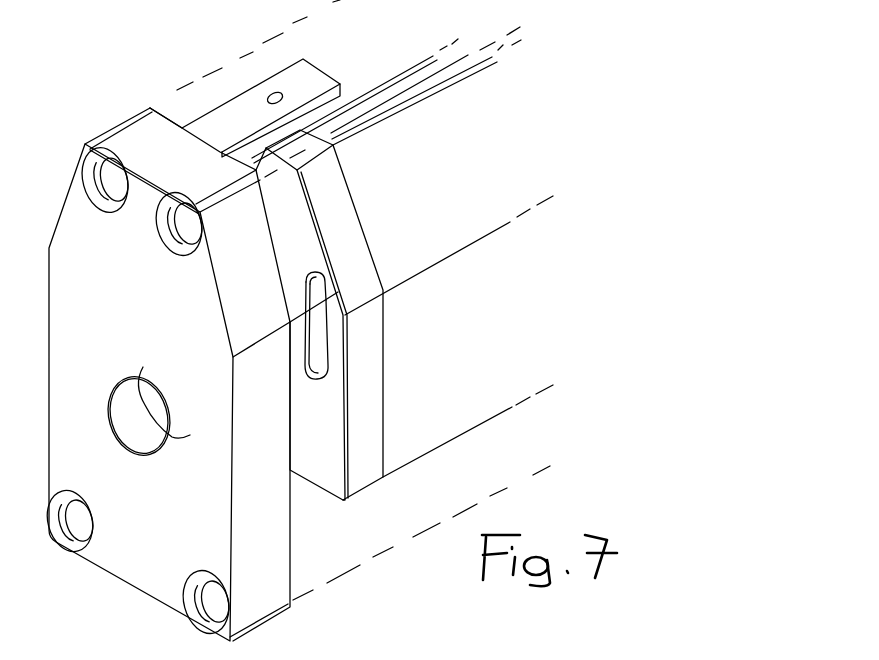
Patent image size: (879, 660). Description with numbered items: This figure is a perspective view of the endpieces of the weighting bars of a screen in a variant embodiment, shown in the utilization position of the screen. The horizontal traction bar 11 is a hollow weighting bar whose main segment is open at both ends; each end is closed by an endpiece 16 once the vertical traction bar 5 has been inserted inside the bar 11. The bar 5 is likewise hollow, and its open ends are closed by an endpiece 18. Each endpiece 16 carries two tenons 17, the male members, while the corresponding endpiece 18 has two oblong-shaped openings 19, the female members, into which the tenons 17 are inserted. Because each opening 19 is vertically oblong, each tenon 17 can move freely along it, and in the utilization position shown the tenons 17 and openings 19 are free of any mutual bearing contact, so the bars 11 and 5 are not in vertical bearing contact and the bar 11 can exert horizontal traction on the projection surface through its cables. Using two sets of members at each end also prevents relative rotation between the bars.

The weighting bar 5 is at (450, 410).
The weighting bar 11 is at (307, 13).
The endpiece 16 is at (123, 550).
The tenon 17 is at (307, 333).
The endpiece 18 is at (360, 463).
The oblong-shaped opening 19 is at (318, 278).